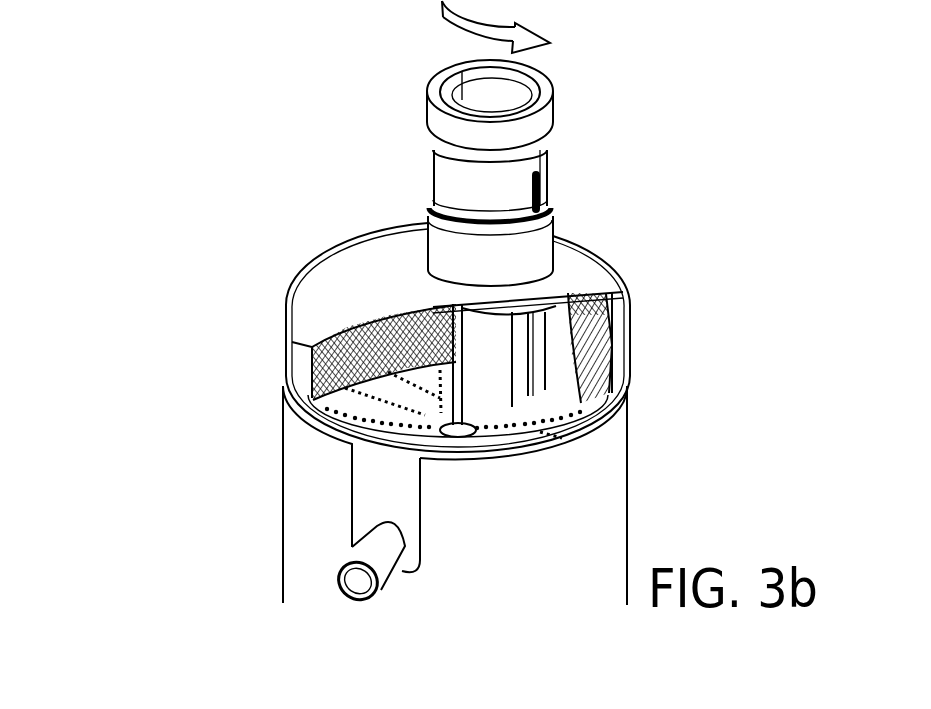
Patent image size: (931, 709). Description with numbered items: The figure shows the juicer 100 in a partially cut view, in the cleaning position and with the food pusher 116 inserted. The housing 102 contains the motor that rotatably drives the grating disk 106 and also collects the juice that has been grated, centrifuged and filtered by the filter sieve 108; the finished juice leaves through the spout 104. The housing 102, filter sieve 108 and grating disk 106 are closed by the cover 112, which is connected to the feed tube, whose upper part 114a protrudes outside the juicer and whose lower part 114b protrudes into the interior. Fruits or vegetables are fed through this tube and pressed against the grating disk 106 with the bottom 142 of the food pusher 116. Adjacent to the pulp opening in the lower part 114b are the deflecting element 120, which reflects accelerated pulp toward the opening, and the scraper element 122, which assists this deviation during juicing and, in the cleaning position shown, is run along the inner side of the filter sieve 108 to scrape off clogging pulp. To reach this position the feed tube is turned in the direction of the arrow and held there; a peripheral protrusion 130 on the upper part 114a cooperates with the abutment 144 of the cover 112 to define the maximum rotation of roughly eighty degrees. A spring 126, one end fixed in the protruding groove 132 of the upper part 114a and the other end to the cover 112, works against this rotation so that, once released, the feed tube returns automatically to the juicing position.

The juicer 100 is at (150, 218).
The housing 102 is at (281, 448).
The spout 104 is at (358, 580).
The grating disk 106 is at (538, 410).
The filter sieve 108 is at (300, 327).
The cover 112 is at (337, 262).
The upper part of the feed tube 114a is at (446, 176).
The lower part of the feed tube 114b is at (486, 352).
The food pusher 116 is at (508, 100).
The deflecting element 120 is at (572, 302).
The scraper element 122 is at (567, 362).
The spring 126 is at (547, 199).
The peripheral protrusion 130 is at (428, 210).
The protruding groove 132 is at (539, 178).
The bottom of the food pusher 142 is at (527, 396).
The abutment 144 is at (541, 222).